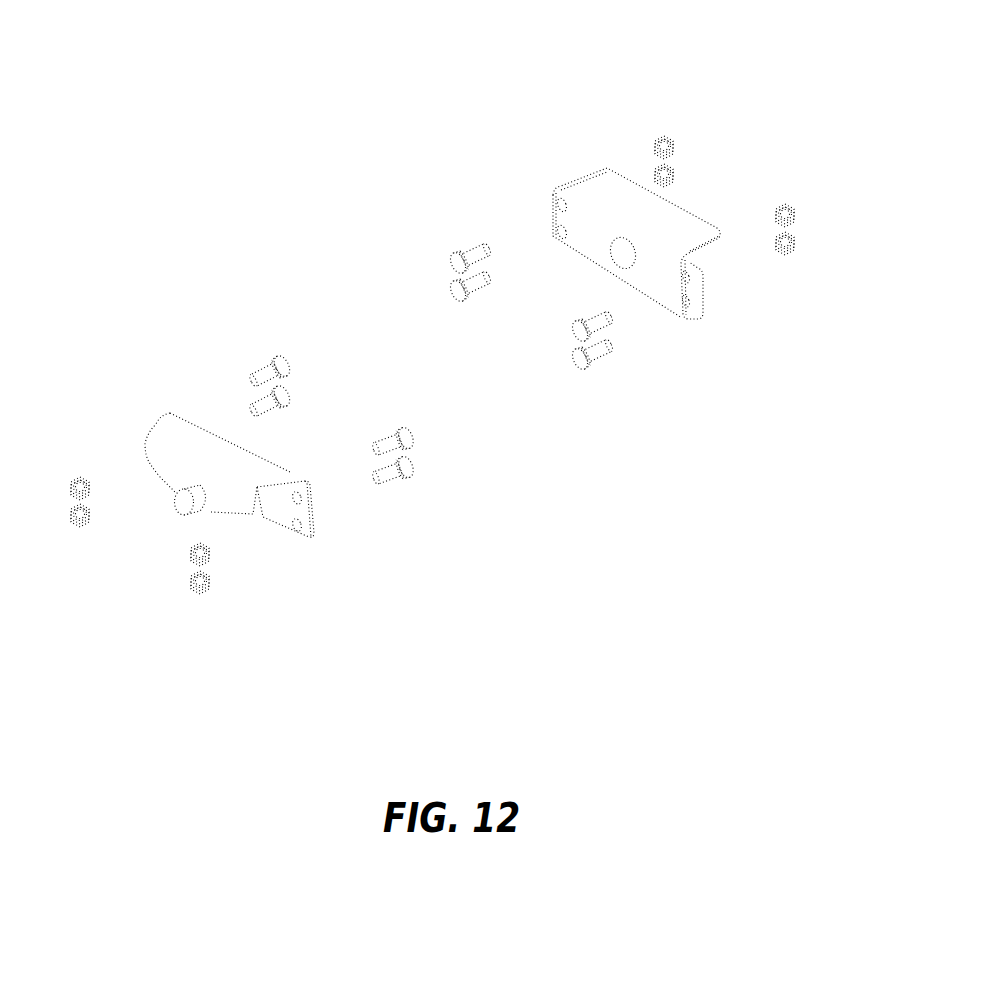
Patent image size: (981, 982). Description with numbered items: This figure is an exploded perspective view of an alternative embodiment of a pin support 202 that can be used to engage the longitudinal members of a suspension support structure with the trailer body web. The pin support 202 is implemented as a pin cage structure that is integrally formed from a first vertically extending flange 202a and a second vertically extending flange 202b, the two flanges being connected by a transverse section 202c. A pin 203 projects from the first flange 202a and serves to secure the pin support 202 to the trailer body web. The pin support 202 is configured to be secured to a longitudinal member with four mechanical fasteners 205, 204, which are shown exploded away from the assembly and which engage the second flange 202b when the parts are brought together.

The pin support 202 is at (416, 178).
The first vertically extending flange 202a is at (225, 508).
The second vertically extending flange 202b is at (653, 292).
The transverse section 202c is at (677, 228).
The pin 203 is at (183, 507).
The mechanical fasteners 204 is at (464, 324).
The mechanical fasteners 205 is at (786, 167).